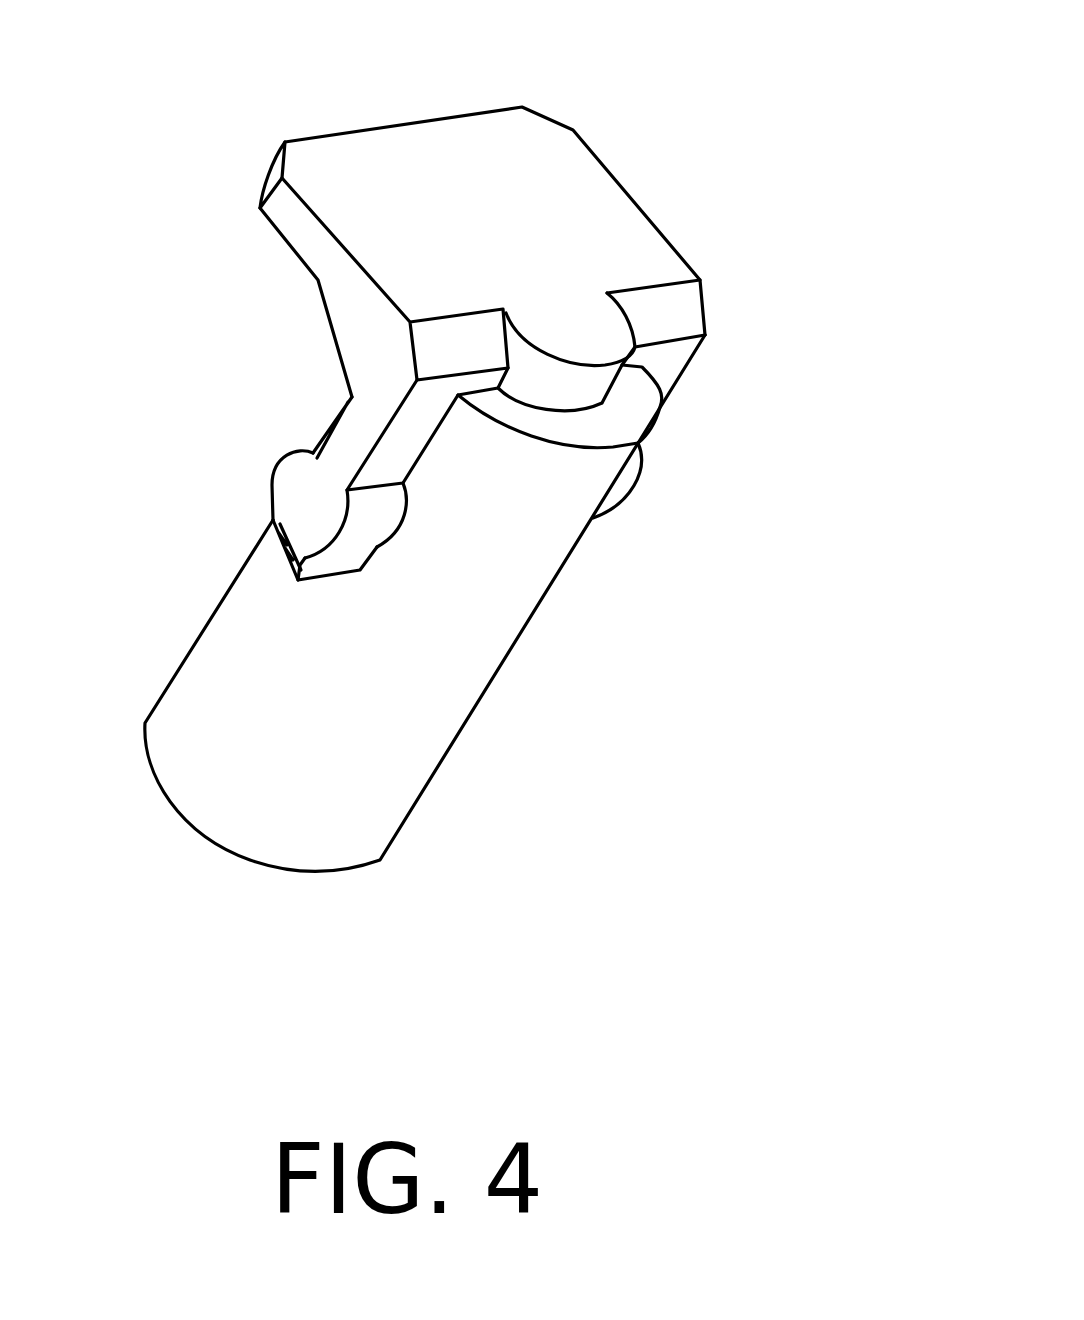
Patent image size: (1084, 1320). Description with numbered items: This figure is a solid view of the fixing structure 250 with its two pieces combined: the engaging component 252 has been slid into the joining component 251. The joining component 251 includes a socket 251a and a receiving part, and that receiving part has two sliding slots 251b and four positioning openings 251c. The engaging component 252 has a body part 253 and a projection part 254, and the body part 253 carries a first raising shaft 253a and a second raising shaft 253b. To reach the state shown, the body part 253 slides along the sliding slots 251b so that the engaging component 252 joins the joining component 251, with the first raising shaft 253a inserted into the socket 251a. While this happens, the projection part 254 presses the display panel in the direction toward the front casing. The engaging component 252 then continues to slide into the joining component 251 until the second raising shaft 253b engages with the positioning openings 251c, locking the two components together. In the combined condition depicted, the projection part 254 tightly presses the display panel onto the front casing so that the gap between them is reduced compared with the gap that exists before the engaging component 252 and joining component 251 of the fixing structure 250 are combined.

The fixing structure 250 is at (502, 522).
The joining component 251 is at (524, 646).
The socket 251a is at (643, 447).
The sliding slots 251b is at (432, 440).
The positioning openings 251c is at (405, 530).
The engaging component 252 is at (502, 290).
The body part 253 is at (687, 380).
The first raising shaft 253a is at (580, 417).
The second raising shaft 253b is at (300, 510).
The projection part 254 is at (408, 152).